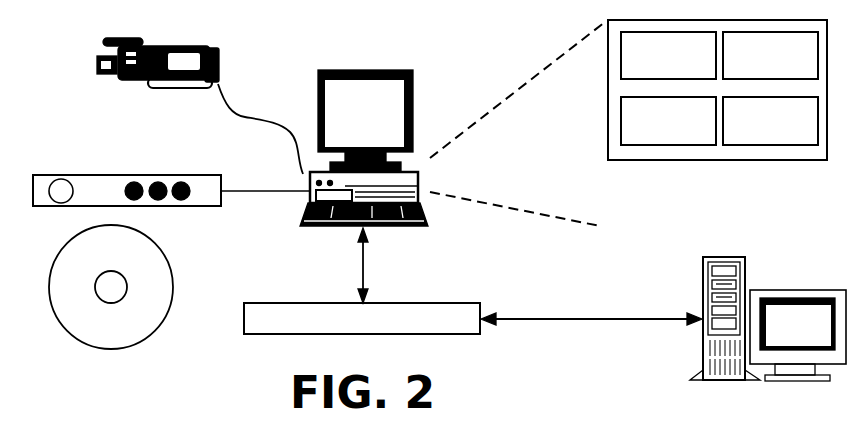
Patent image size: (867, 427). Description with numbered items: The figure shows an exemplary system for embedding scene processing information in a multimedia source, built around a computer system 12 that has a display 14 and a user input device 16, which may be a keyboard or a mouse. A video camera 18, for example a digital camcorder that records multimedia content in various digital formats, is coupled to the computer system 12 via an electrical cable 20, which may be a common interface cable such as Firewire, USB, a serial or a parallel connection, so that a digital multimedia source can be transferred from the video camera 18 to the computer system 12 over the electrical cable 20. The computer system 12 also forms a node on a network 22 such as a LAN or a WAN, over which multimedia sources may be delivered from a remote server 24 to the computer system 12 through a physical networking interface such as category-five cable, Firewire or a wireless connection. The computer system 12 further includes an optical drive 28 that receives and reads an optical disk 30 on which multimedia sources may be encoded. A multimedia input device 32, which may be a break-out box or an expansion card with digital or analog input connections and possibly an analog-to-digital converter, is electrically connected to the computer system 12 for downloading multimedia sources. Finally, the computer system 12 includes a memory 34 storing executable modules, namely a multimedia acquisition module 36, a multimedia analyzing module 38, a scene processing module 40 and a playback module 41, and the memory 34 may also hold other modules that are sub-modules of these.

The computer system 12 is at (431, 158).
The display 14 is at (412, 70).
The user input device 16 is at (386, 228).
The video camera 18 is at (192, 45).
The electrical cable 20 is at (240, 117).
The network 22 is at (243, 322).
The remote server 24 is at (738, 257).
The optical drive 28 is at (300, 198).
The optical disk 30 is at (111, 349).
The multimedia input device 32 is at (96, 174).
The memory 34 is at (717, 103).
The multimedia acquisition module 36 is at (681, 66).
The multimedia analyzing module 38 is at (783, 66).
The scene processing module 40 is at (681, 132).
The playback module 41 is at (783, 132).